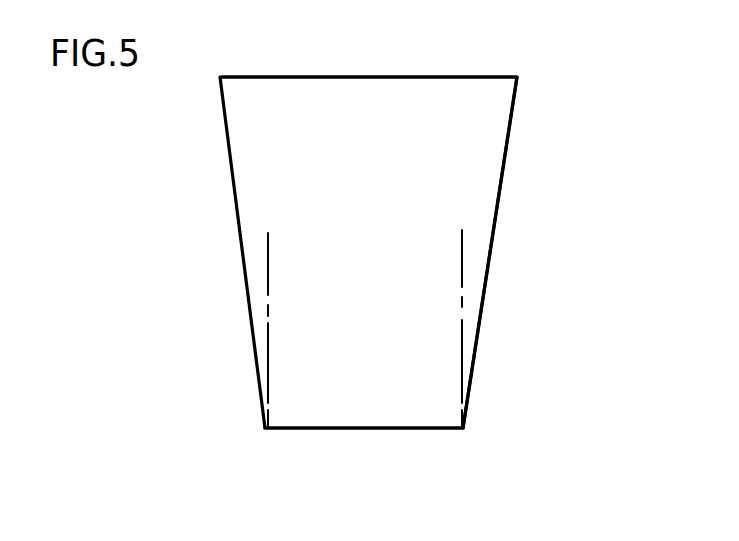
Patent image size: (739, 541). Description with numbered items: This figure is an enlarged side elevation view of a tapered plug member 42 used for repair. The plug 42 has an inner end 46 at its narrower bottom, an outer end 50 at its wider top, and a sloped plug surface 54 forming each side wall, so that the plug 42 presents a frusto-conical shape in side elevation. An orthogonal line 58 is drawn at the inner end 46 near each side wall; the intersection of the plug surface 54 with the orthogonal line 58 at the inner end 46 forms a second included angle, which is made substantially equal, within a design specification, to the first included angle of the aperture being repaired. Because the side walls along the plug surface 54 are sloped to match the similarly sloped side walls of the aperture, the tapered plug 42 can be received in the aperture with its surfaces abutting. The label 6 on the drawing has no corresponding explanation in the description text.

The tapered plug member 42 is at (500, 377).
The outer end 50 is at (445, 77).
The plug surface 54 is at (505, 170).
The inner end 46 is at (297, 429).
The orthogonal line 58 is at (267, 283).
The side panel 6 is at (257, 355).